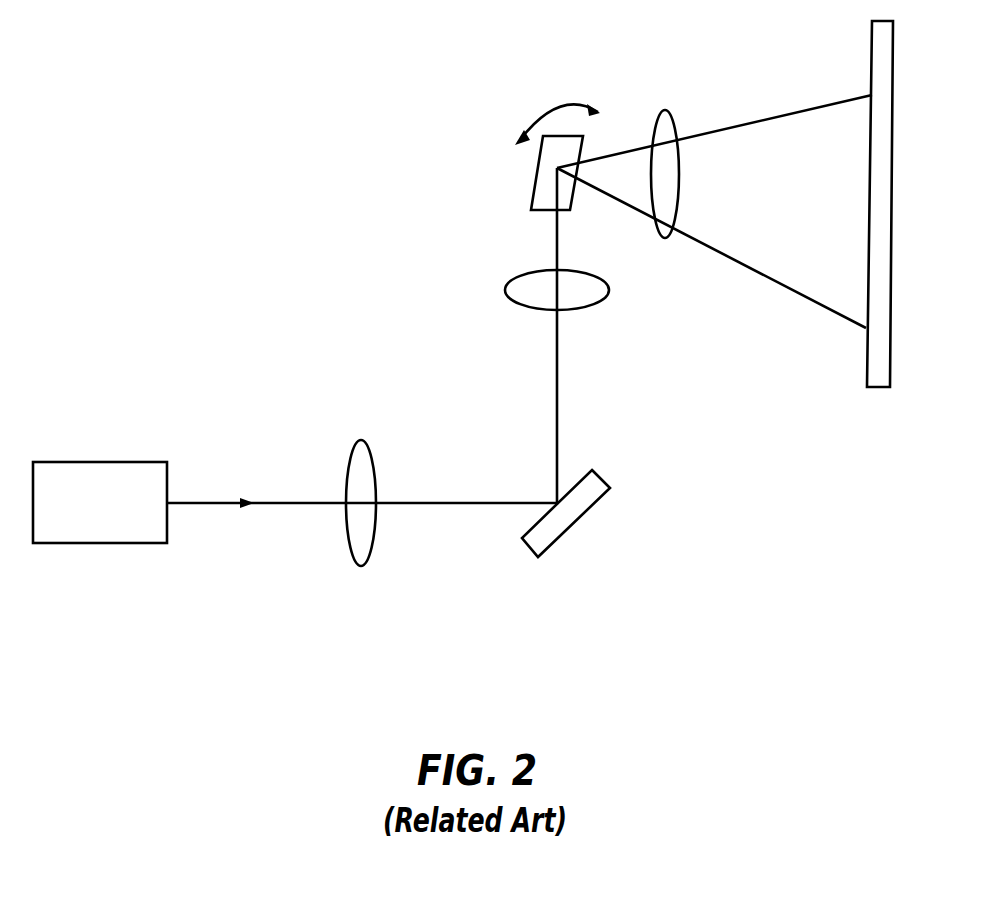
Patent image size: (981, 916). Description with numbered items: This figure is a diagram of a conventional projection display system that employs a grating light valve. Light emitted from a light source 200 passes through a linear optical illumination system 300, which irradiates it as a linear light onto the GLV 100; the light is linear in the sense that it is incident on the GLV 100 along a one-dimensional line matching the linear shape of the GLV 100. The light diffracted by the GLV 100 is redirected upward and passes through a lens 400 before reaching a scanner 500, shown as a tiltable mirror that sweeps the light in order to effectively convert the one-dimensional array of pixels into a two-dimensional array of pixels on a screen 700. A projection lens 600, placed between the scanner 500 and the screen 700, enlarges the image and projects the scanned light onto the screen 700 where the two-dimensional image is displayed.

The GLV 100 is at (565, 518).
The light source 200 is at (96, 478).
The linear optical illumination system 300 is at (363, 543).
The lens 400 is at (508, 287).
The scanner 500 is at (541, 177).
The projection lens 600 is at (671, 178).
The screen 700 is at (876, 380).